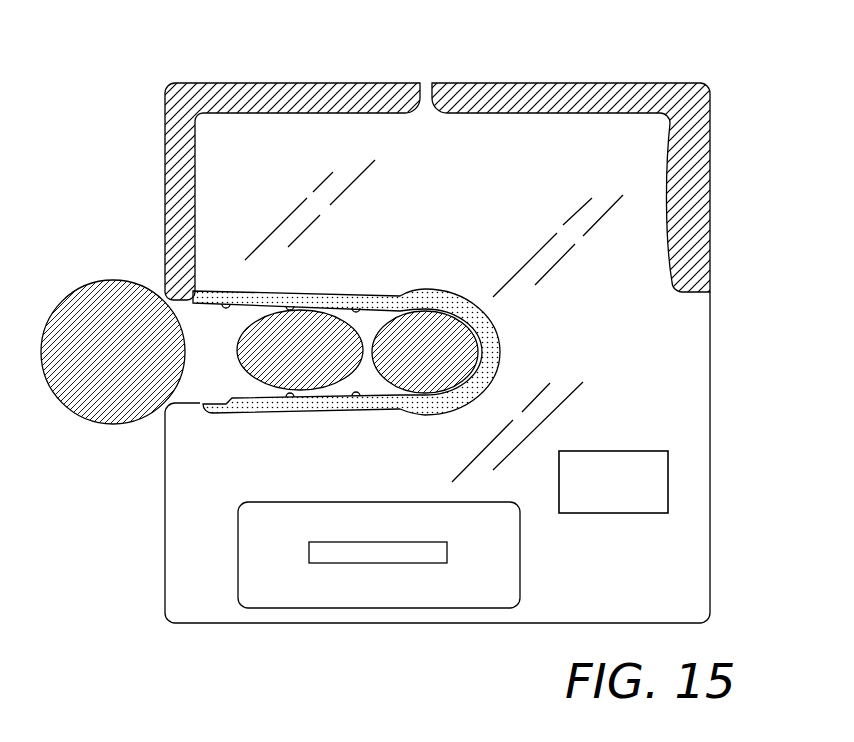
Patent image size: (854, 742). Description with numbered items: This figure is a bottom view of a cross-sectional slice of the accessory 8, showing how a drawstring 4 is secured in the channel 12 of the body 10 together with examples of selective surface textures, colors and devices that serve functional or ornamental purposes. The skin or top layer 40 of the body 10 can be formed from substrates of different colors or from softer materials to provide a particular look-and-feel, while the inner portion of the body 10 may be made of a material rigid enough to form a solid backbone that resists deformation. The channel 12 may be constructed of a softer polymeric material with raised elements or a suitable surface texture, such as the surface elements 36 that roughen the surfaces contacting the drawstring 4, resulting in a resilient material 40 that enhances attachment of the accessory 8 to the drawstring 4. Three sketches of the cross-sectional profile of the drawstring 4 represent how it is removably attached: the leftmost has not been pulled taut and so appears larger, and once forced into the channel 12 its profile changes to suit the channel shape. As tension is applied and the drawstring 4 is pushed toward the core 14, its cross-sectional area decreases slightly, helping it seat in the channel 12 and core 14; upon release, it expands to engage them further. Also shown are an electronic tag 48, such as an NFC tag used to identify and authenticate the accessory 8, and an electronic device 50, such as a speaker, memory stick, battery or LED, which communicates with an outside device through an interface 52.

The accessory 8 is at (729, 128).
The body 10 is at (710, 360).
The channel 12 is at (192, 335).
The core 14 is at (455, 313).
The surface elements 36 is at (232, 401).
The top layer 40 is at (292, 83).
The drawstring 4 is at (108, 364).
The electronic tag 48 is at (595, 495).
The electronic device 50 is at (460, 597).
The interface 52 is at (383, 563).